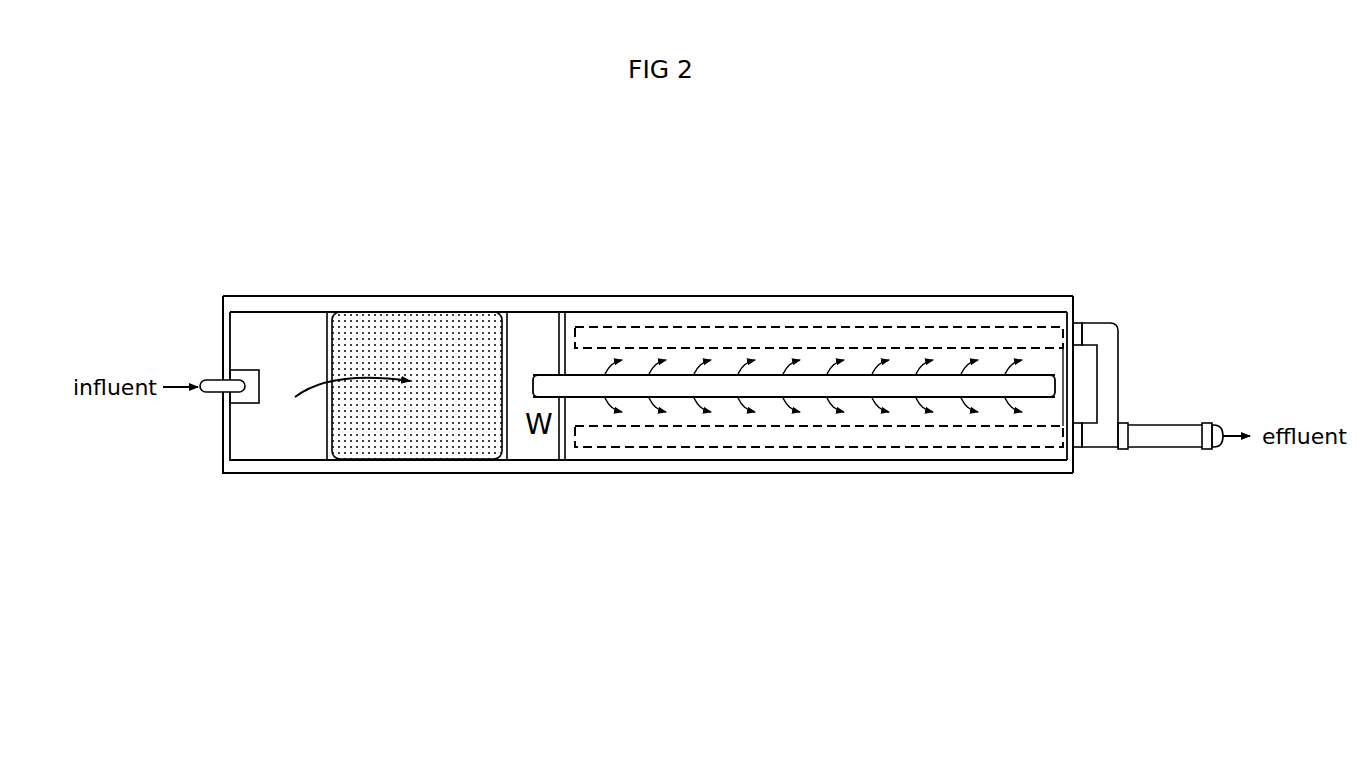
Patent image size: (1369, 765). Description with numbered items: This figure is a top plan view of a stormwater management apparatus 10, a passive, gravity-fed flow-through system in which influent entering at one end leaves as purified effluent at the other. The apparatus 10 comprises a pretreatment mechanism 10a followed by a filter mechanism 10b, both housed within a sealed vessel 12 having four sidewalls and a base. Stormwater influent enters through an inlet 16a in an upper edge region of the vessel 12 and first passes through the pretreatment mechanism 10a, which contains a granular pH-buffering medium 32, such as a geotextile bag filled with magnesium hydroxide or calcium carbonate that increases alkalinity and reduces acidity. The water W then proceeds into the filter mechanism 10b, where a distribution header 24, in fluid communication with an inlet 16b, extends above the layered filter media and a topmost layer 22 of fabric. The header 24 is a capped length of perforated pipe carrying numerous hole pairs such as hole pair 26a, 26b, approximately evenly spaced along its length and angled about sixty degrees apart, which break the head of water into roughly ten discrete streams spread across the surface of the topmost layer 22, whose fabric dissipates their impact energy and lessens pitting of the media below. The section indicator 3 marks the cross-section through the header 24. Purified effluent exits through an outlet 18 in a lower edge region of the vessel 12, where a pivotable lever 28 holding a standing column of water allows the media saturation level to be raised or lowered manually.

The stormwater management apparatus 10 is at (747, 296).
The pretreatment mechanism 10a is at (417, 312).
The filter mechanism 10b is at (700, 312).
The vessel 12 is at (1030, 296).
The influent inlet 16a is at (223, 382).
The inlet 16b is at (542, 381).
The effluent outlet 18 is at (1214, 424).
The topmost layer of fabric 22 is at (813, 393).
The distribution header 24 is at (833, 296).
The hole of hole pair 26a is at (915, 397).
The hole of hole pair 26b is at (915, 375).
The pivotable lever 28 is at (1158, 425).
The section line 3 is at (1043, 357).
The granular pH-buffering medium 32 is at (466, 390).